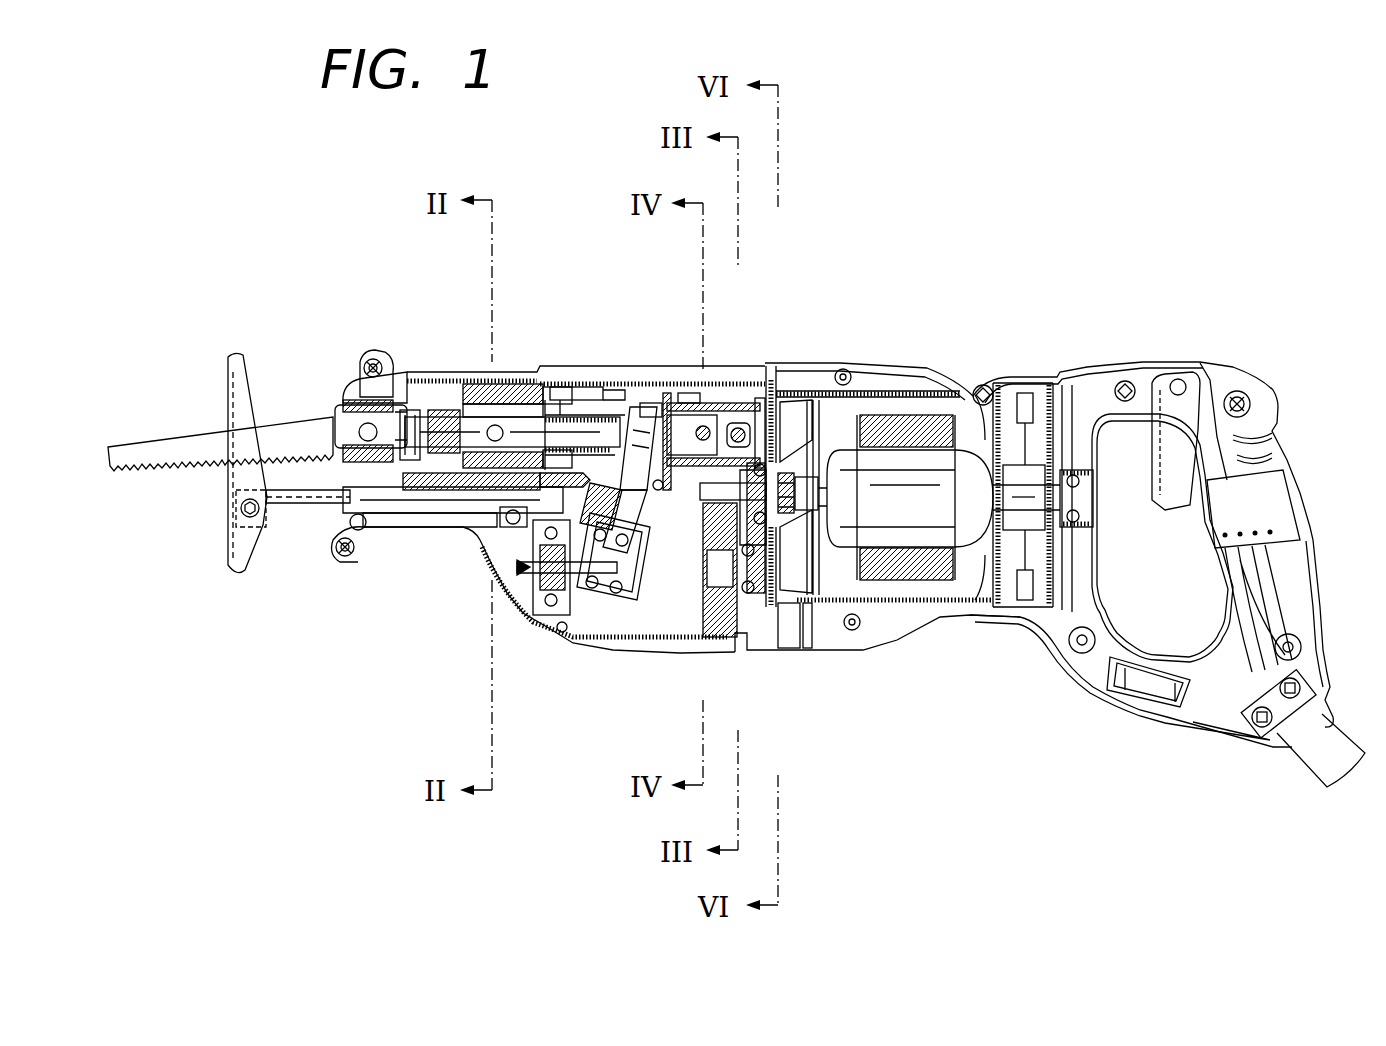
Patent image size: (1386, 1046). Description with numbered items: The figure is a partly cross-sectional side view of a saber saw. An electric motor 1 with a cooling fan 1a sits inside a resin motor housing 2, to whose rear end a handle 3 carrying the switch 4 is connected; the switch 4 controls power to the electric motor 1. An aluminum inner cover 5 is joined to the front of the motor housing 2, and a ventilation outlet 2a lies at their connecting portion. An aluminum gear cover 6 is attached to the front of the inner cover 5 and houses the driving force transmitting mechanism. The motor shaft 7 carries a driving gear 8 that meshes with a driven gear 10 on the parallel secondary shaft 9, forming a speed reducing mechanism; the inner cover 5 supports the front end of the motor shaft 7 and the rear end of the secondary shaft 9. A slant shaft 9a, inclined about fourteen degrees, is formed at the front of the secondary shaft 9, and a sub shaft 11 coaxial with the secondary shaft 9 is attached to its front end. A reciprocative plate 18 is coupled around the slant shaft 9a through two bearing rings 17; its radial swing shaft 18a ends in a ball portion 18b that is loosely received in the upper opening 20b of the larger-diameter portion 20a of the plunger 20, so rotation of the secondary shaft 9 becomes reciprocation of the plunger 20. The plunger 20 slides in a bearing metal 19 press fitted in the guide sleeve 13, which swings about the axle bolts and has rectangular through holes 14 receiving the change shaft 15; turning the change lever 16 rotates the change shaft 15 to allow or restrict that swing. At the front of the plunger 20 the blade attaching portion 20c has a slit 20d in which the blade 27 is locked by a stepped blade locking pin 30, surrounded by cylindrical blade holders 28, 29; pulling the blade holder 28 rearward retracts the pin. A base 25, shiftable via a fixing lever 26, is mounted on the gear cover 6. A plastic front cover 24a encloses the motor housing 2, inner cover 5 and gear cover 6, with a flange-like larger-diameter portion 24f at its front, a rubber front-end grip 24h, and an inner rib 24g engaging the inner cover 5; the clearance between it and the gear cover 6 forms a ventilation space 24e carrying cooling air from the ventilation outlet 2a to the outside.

The electric motor 1 is at (913, 415).
The cooling fan 1a is at (815, 612).
The motor housing 2 is at (878, 415).
The ventilation outlet 2a is at (790, 617).
The handle 3 is at (1253, 380).
The switch 4 is at (1270, 495).
The inner cover 5 is at (760, 410).
The gear cover 6 is at (550, 393).
The motor shaft 7 is at (812, 486).
The driving gear 8 is at (700, 493).
The secondary shaft 9 is at (665, 555).
The slant shaft 9a is at (643, 598).
The driven gear 10 is at (740, 655).
The sub shaft 11 is at (518, 615).
The guide sleeve 13 is at (673, 400).
The rectangular through holes 14 is at (795, 378).
The change shaft 15 is at (745, 417).
The change lever 16 is at (735, 420).
The bearing rings 17 is at (585, 615).
The reciprocative plate 18 is at (618, 620).
The swing shaft 18a is at (598, 425).
The ball portion 18b is at (633, 403).
The bearing metal 19 is at (510, 385).
The plunger 20 is at (458, 417).
The larger-diameter portion 20a is at (690, 407).
The upper opening 20b is at (650, 410).
The blade attaching portion 20c is at (345, 413).
The slit 20d is at (345, 465).
The front cover 24a is at (897, 647).
The ventilation space 24e is at (437, 515).
The larger-diameter portion 24f is at (376, 358).
The inner rib 24g is at (787, 395).
The front-end grip 24h is at (480, 373).
The base 25 is at (232, 568).
The fixing lever 26 is at (393, 530).
The blade 27 is at (152, 457).
The blade holder 28 is at (360, 405).
The blade holder 29 is at (402, 398).
The stepped blade locking pin 30 is at (352, 400).